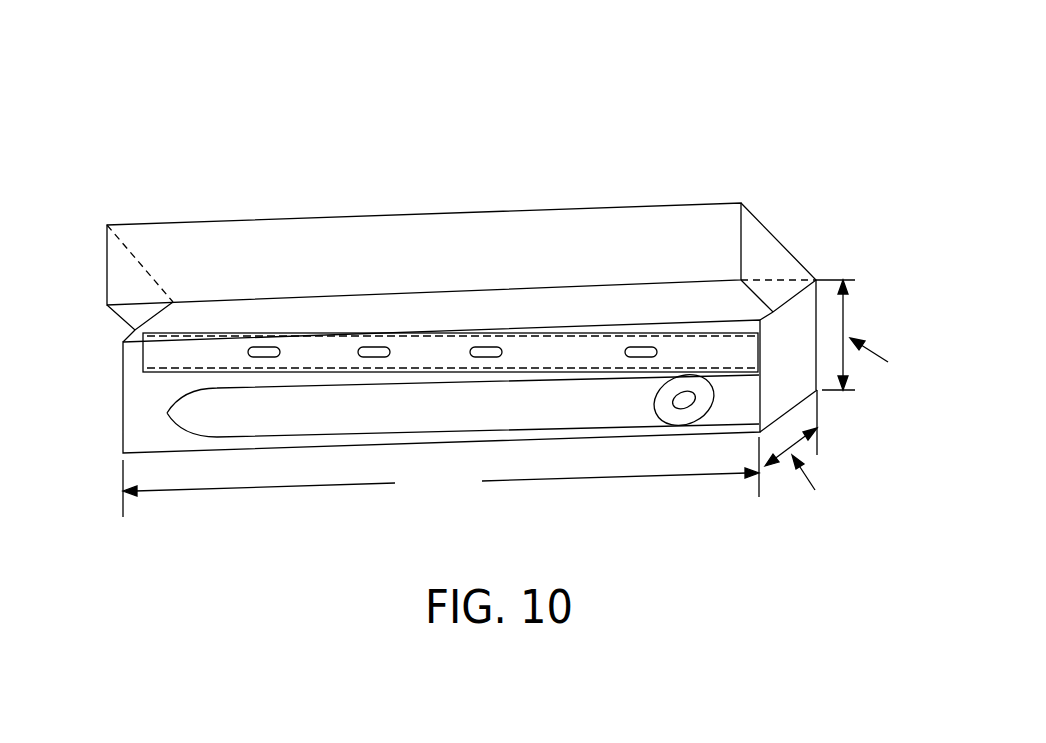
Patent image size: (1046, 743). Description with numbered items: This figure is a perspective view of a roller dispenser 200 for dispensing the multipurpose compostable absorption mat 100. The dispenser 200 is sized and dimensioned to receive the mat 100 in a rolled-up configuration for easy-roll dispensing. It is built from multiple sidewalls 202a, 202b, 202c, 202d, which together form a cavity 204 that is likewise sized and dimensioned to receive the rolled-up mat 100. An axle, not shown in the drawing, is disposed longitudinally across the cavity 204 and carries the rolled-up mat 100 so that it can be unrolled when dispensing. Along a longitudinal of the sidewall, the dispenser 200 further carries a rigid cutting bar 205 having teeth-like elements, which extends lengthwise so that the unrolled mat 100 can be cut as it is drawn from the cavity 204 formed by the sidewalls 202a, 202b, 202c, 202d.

The dispenser 200 is at (264, 96).
The sidewall 202a is at (118, 262).
The sidewall 202b is at (800, 312).
The sidewall 202c is at (560, 223).
The sidewall 202d is at (323, 443).
The cavity 204 is at (690, 308).
The rigid cutting bar 205 is at (600, 362).
The multipurpose compostable absorption mat 100 is at (168, 413).